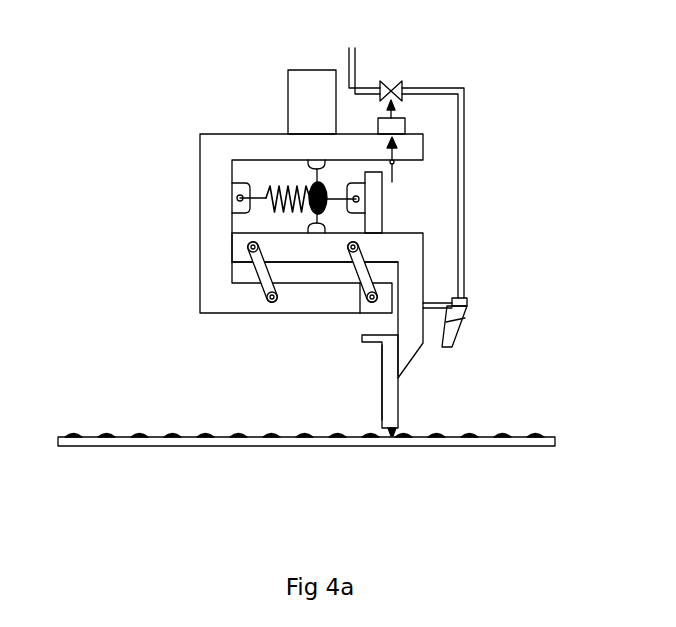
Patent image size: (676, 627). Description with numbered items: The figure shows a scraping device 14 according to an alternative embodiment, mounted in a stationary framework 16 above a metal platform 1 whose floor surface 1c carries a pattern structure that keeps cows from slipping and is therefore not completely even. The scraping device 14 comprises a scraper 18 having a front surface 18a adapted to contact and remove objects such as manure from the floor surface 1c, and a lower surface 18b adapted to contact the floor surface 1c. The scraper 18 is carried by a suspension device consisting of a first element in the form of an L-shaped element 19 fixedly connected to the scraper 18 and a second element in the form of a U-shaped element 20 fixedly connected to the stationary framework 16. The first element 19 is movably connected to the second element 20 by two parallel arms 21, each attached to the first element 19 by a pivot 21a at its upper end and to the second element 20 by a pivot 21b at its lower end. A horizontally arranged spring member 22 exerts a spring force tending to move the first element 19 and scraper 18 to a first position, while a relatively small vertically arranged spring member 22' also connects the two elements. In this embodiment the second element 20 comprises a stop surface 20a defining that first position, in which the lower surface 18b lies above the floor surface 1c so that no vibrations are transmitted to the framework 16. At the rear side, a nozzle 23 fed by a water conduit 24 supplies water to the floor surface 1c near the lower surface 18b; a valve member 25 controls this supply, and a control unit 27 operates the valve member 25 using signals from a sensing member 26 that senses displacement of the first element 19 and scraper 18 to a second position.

The platform 1 is at (122, 442).
The floor surface 1c is at (235, 433).
The scraping device 14 is at (136, 98).
The stationary framework 16 is at (303, 100).
The scraper 18 is at (390, 398).
The front surface 18a is at (382, 395).
The lower surface 18b is at (392, 440).
The L-shaped element 19 is at (415, 240).
The U-shaped element 20 is at (218, 173).
The stop surface 20a is at (230, 245).
The parallel arms 21 is at (262, 273).
The pivot 21a is at (262, 247).
The pivot 21b is at (365, 300).
The spring member 22 is at (298, 173).
The spring member 22' is at (341, 166).
The nozzle 23 is at (452, 329).
The water conduit 24 is at (462, 180).
The valve member 25 is at (393, 85).
The sensing member 26 is at (395, 172).
The control unit 27 is at (403, 125).